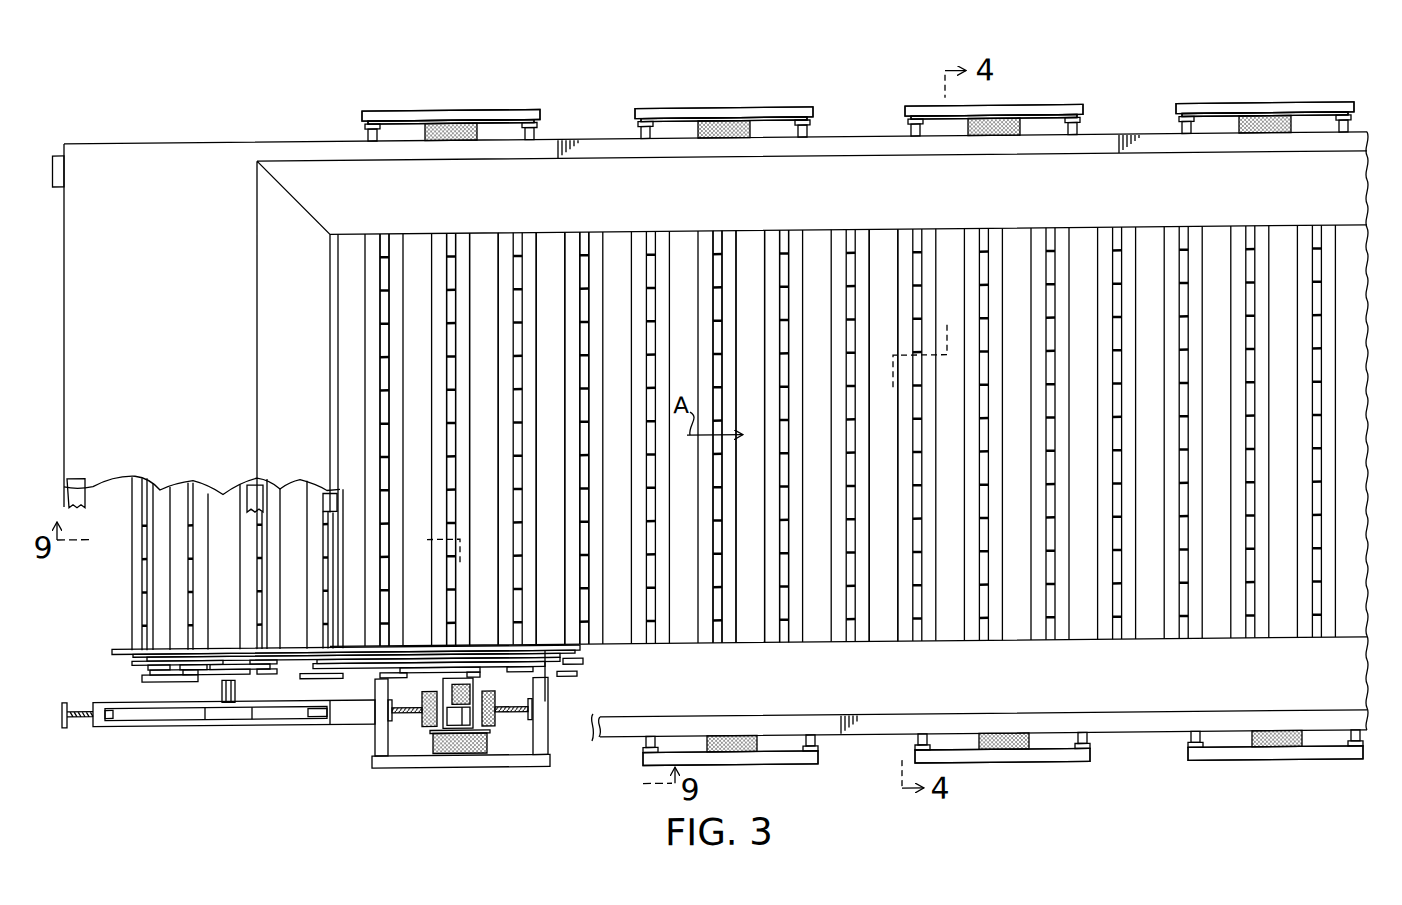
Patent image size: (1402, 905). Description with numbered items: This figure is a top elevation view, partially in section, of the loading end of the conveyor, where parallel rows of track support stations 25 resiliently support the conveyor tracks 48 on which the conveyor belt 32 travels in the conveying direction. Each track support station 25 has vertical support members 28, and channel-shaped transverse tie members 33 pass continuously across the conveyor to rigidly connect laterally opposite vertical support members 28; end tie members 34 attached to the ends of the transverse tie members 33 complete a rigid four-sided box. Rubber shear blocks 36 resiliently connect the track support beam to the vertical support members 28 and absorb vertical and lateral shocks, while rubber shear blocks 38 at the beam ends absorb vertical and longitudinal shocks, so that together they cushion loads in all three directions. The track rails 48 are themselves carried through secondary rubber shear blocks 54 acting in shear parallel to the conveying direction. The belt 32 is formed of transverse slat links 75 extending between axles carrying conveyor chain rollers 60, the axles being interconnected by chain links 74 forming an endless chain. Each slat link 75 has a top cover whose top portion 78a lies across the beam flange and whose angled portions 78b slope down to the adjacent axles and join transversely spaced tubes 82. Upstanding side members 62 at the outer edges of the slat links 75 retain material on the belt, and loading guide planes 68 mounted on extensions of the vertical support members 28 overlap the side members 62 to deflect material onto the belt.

The track support station 25 is at (462, 89).
The vertical support member 28 is at (400, 700).
The conveyor belt 32 is at (611, 243).
The transverse tie member 33 is at (364, 124).
The end tie member 34 is at (503, 111).
The rubber shear block 36 is at (428, 726).
The rubber shear block 38 is at (447, 133).
The conveyor track 48 is at (578, 665).
The rubber shear block 54 is at (470, 698).
The conveyor chain roller 60 is at (528, 645).
The side member 62 is at (425, 645).
The loading guide plane 68 is at (856, 171).
The chain link 74 is at (296, 650).
The slat link 75 is at (545, 242).
The top portion of top slat link cover 78a is at (751, 243).
The angular portion of top slat link cover 78b is at (726, 243).
The transversely spaced tube 82 is at (450, 444).